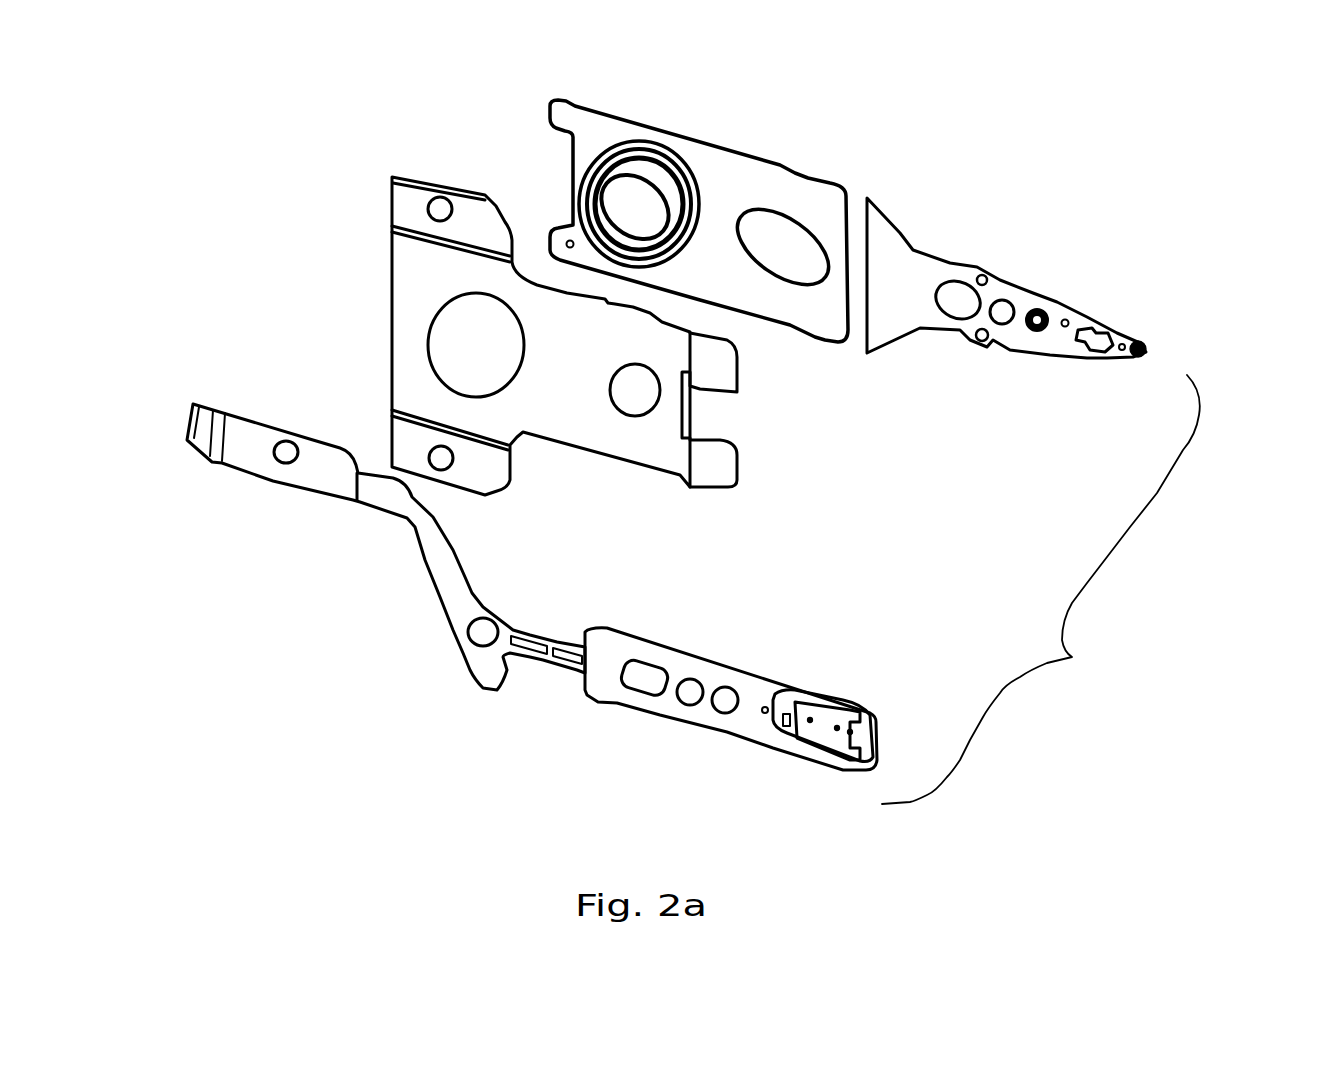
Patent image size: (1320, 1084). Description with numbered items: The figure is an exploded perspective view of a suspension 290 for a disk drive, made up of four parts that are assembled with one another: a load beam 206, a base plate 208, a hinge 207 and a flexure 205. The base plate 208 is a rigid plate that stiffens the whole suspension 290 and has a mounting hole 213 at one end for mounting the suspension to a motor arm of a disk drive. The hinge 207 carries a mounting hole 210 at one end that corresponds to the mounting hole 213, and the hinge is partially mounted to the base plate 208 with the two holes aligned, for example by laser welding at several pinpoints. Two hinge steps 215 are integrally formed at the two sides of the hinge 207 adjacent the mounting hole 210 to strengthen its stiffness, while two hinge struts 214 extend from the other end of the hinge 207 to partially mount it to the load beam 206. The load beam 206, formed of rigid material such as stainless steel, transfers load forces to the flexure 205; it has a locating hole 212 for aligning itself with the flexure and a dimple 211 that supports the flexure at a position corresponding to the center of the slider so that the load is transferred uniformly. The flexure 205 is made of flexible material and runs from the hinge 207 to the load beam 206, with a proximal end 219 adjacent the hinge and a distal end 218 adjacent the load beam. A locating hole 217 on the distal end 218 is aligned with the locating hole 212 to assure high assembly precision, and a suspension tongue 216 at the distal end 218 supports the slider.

The flexure 205 is at (607, 648).
The load beam 206 is at (923, 280).
The hinge 207 is at (568, 410).
The base plate 208 is at (720, 190).
The mounting hole 210 is at (438, 298).
The dimple 211 is at (1146, 341).
The locating hole 212 is at (1047, 297).
The mounting hole 213 is at (657, 155).
The hinge struts 214 is at (717, 463).
The hinge steps 215 is at (405, 203).
The suspension tongue 216 is at (828, 723).
The locating hole 217 is at (703, 685).
The distal end 218 is at (762, 694).
The proximal end 219 is at (260, 450).
The suspension 290 is at (1041, 589).